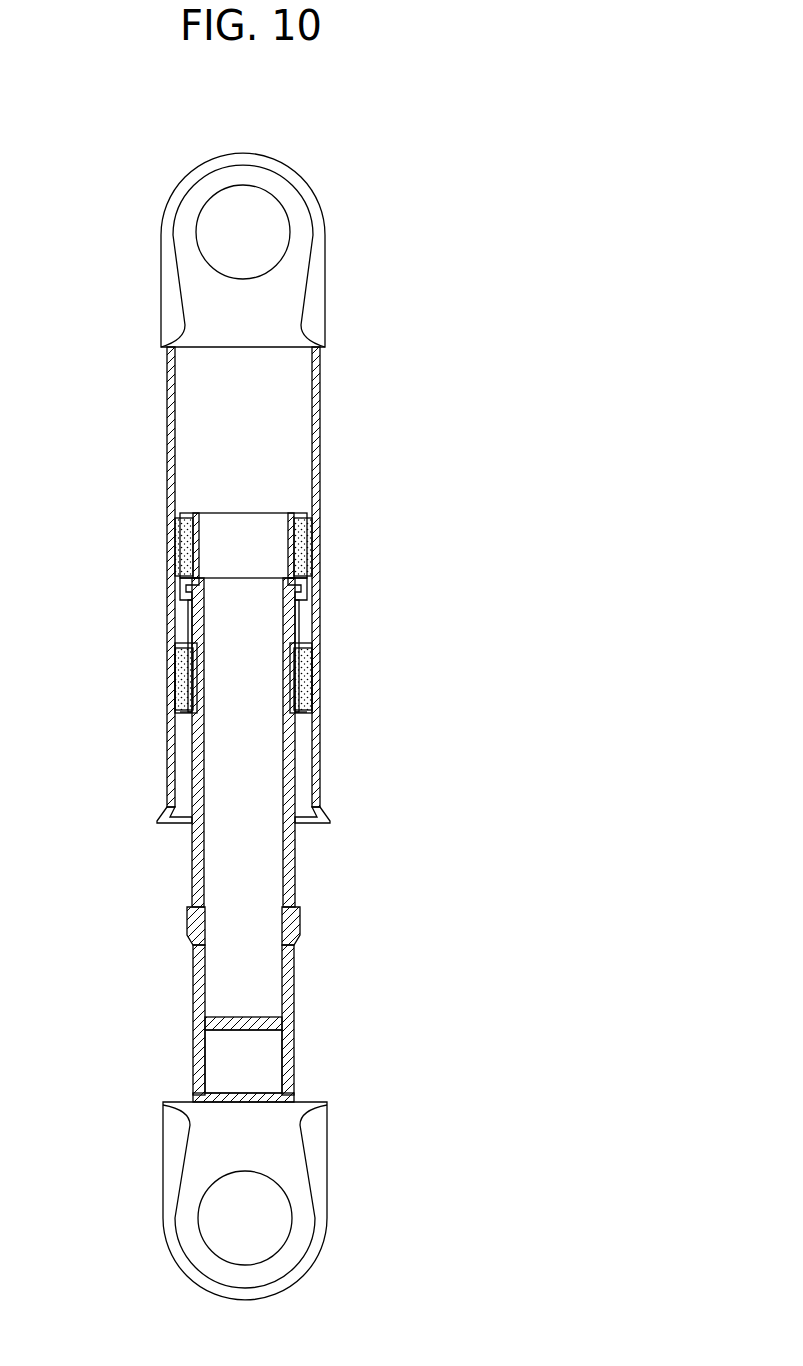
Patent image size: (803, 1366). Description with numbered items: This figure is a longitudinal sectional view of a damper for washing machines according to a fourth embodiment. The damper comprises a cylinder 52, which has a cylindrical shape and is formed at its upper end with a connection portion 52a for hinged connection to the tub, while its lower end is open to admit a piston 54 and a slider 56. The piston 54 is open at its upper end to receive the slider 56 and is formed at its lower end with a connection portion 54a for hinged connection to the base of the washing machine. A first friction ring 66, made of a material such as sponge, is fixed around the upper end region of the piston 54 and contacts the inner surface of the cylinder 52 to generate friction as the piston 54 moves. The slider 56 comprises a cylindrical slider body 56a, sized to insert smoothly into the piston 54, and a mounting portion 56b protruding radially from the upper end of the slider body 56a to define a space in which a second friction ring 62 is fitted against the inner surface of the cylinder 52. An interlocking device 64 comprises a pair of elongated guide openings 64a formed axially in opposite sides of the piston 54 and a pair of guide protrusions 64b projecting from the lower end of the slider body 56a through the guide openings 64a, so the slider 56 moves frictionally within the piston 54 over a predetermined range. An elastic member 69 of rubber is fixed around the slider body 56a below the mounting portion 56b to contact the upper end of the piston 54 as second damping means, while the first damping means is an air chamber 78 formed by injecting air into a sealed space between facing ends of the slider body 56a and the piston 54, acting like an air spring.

The cylinder 52 is at (252, 488).
The connection portion 52a is at (293, 300).
The piston 54 is at (264, 1184).
The connection portion 54a is at (298, 1152).
The slider 56 is at (247, 710).
The slider body 56a is at (290, 622).
The mounting portion 56b is at (300, 563).
The second friction ring 62 is at (181, 555).
The interlocking device 64 is at (256, 1001).
The guide openings 64a is at (296, 998).
The guide protrusions 64b is at (300, 935).
The first friction ring 66 is at (185, 680).
The elastic member 69 is at (190, 592).
The air chamber 78 is at (207, 1045).